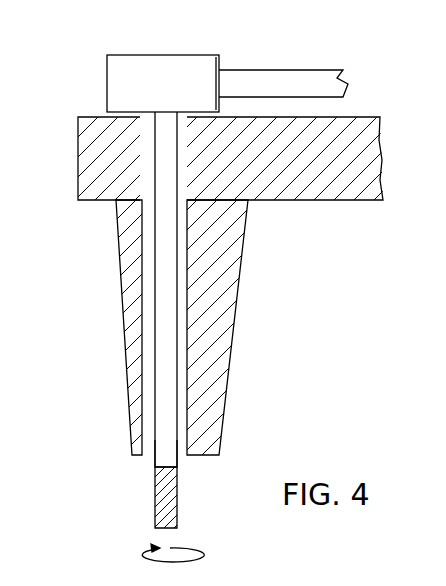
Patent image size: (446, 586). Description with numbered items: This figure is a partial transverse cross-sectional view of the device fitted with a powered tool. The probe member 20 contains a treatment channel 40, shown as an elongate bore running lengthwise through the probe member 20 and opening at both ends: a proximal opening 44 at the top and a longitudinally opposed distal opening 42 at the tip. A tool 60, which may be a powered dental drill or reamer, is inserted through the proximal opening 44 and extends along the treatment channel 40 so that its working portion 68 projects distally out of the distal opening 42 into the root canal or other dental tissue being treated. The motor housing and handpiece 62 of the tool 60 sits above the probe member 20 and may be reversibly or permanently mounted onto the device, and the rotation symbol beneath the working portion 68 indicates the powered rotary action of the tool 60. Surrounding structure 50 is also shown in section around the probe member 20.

The probe member 20 is at (233, 267).
The treatment channel 40 is at (150, 317).
The distal opening 42 is at (152, 448).
The proximal opening 44 is at (145, 118).
The housing 50 is at (317, 180).
The tool 60 is at (163, 267).
The motor housing and handpiece 62 is at (283, 69).
The working portion 68 is at (187, 467).